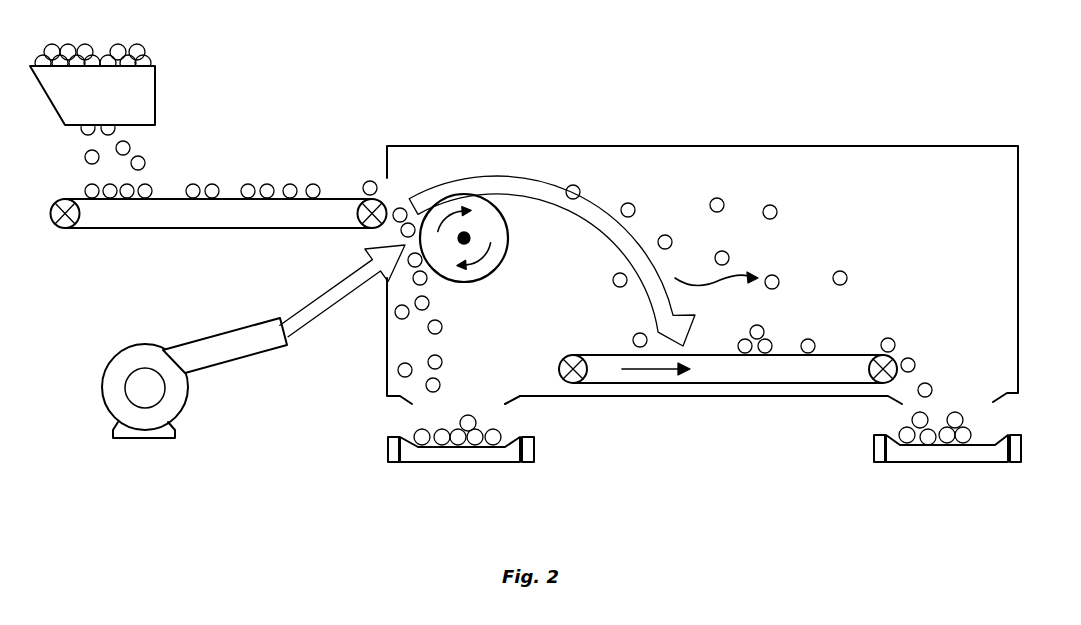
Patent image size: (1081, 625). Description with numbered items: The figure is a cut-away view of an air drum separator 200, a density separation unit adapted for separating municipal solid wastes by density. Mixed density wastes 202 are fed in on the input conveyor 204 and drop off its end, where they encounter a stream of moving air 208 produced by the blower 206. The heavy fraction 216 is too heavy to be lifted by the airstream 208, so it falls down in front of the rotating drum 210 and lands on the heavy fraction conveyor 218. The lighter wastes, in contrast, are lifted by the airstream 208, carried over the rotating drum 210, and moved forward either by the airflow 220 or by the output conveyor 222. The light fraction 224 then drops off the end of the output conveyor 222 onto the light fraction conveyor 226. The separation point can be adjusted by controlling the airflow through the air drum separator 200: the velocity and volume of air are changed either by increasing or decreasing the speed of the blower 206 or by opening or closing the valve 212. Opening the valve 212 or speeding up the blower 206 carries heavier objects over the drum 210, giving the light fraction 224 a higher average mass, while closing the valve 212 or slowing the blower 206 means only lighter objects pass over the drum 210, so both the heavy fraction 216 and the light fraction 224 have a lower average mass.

The air drum separator 200 is at (850, 90).
The mixed density wastes 202 is at (140, 88).
The input conveyor 204 is at (150, 228).
The blower 206 is at (107, 367).
The stream of moving air 208 is at (355, 275).
The rotating drum 210 is at (492, 258).
The valve 212 is at (475, 183).
The heavy fraction 216 is at (412, 420).
The heavy fraction conveyor 218 is at (430, 455).
The airflow 220 is at (713, 283).
The output conveyor 222 is at (828, 372).
The light fraction 224 is at (968, 437).
The light fraction conveyor 226 is at (970, 455).